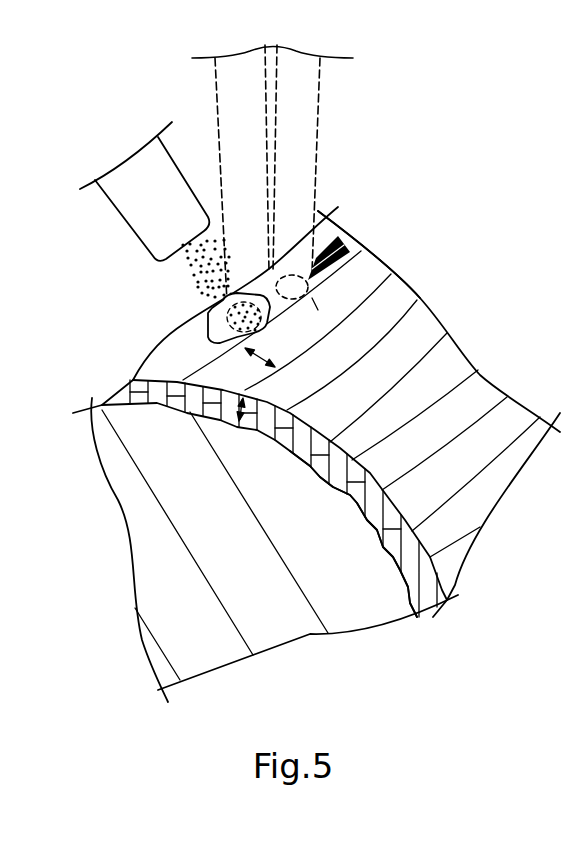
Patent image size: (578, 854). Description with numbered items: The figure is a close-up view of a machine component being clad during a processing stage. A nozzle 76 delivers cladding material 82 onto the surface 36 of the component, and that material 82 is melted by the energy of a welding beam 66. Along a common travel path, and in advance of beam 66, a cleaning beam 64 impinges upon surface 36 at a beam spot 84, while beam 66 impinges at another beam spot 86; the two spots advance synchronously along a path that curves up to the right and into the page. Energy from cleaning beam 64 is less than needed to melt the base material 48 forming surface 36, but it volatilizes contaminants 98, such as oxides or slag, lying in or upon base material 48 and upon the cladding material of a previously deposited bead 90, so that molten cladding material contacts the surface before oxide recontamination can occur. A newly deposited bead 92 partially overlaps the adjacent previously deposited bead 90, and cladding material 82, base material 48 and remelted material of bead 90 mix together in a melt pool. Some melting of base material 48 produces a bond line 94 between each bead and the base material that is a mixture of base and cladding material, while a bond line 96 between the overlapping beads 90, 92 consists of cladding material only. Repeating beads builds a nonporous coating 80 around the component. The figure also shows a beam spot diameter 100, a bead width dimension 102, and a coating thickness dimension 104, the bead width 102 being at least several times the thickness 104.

The surface 36 is at (185, 365).
The base material 48 is at (100, 440).
The cleaning beam 64 is at (329, 119).
The welding beam 66 is at (211, 119).
The nozzle 76 is at (107, 197).
The coating 80 is at (434, 327).
The cladding material 82 is at (173, 282).
The beam spot 84 is at (296, 273).
The beam spot 86 is at (252, 304).
The previously deposited bead 90 is at (397, 292).
The newly deposited bead 92 is at (172, 405).
The bond line 94 is at (322, 490).
The bond line 96 is at (328, 443).
The contaminants 98 is at (352, 266).
The beam spot diameter 100 is at (297, 317).
The bead width dimension 102 is at (262, 356).
The coating thickness dimension 104 is at (242, 397).